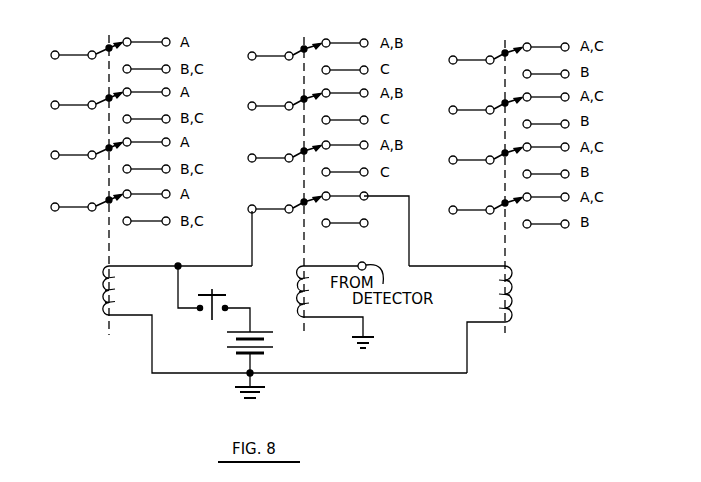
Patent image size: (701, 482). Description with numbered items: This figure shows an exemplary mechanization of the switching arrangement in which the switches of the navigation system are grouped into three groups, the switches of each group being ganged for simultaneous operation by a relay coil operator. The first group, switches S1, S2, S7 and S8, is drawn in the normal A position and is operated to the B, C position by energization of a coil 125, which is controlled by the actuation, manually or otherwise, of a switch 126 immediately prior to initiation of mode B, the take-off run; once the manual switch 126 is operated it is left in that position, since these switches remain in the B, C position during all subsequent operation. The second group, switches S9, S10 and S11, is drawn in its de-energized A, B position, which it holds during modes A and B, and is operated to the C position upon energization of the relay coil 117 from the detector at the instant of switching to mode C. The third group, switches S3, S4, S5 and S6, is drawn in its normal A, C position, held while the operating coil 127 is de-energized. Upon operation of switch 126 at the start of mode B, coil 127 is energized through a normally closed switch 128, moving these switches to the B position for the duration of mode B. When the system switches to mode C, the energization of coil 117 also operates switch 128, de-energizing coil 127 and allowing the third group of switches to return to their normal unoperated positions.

The relay coil 117 is at (309, 295).
The coil 125 is at (104, 297).
The switch 126 is at (214, 294).
The operating coil 127 is at (512, 300).
The normally closed switch 128 is at (303, 209).
The switch S1 is at (89, 50).
The switch S2 is at (89, 100).
The switch S3 is at (483, 205).
The switch S4 is at (483, 155).
The switch S5 is at (483, 55).
The switch S6 is at (483, 105).
The switch S7 is at (89, 150).
The switch S8 is at (89, 202).
The switch S9 is at (286, 51).
The switch S10 is at (288, 101).
The switch S11 is at (286, 153).